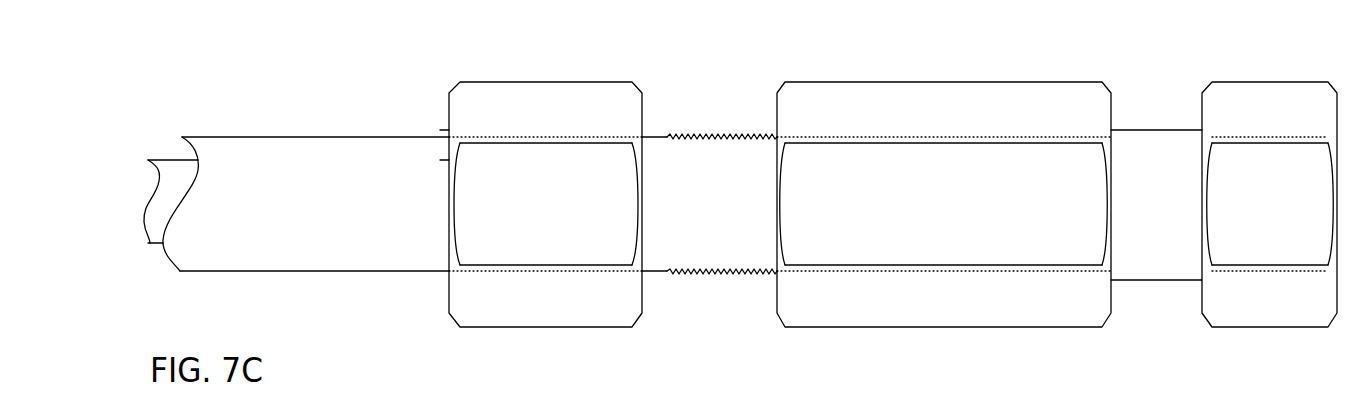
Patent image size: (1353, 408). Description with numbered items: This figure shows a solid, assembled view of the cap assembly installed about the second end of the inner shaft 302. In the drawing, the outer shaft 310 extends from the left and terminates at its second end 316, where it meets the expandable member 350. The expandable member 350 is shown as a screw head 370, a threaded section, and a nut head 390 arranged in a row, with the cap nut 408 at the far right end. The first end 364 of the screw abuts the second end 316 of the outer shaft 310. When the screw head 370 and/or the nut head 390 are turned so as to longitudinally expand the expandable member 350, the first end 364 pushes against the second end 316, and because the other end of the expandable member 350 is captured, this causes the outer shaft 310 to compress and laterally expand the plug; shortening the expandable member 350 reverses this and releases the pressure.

The inner shaft 302 is at (165, 160).
The outer shaft 310 is at (322, 137).
The second end of the outer shaft 316 is at (448, 160).
The first end of the screw 364 is at (448, 130).
The expandable member 350 is at (714, 63).
The screw head 370 is at (515, 82).
The nut head 390 is at (867, 82).
The cap nut 408 is at (1270, 82).